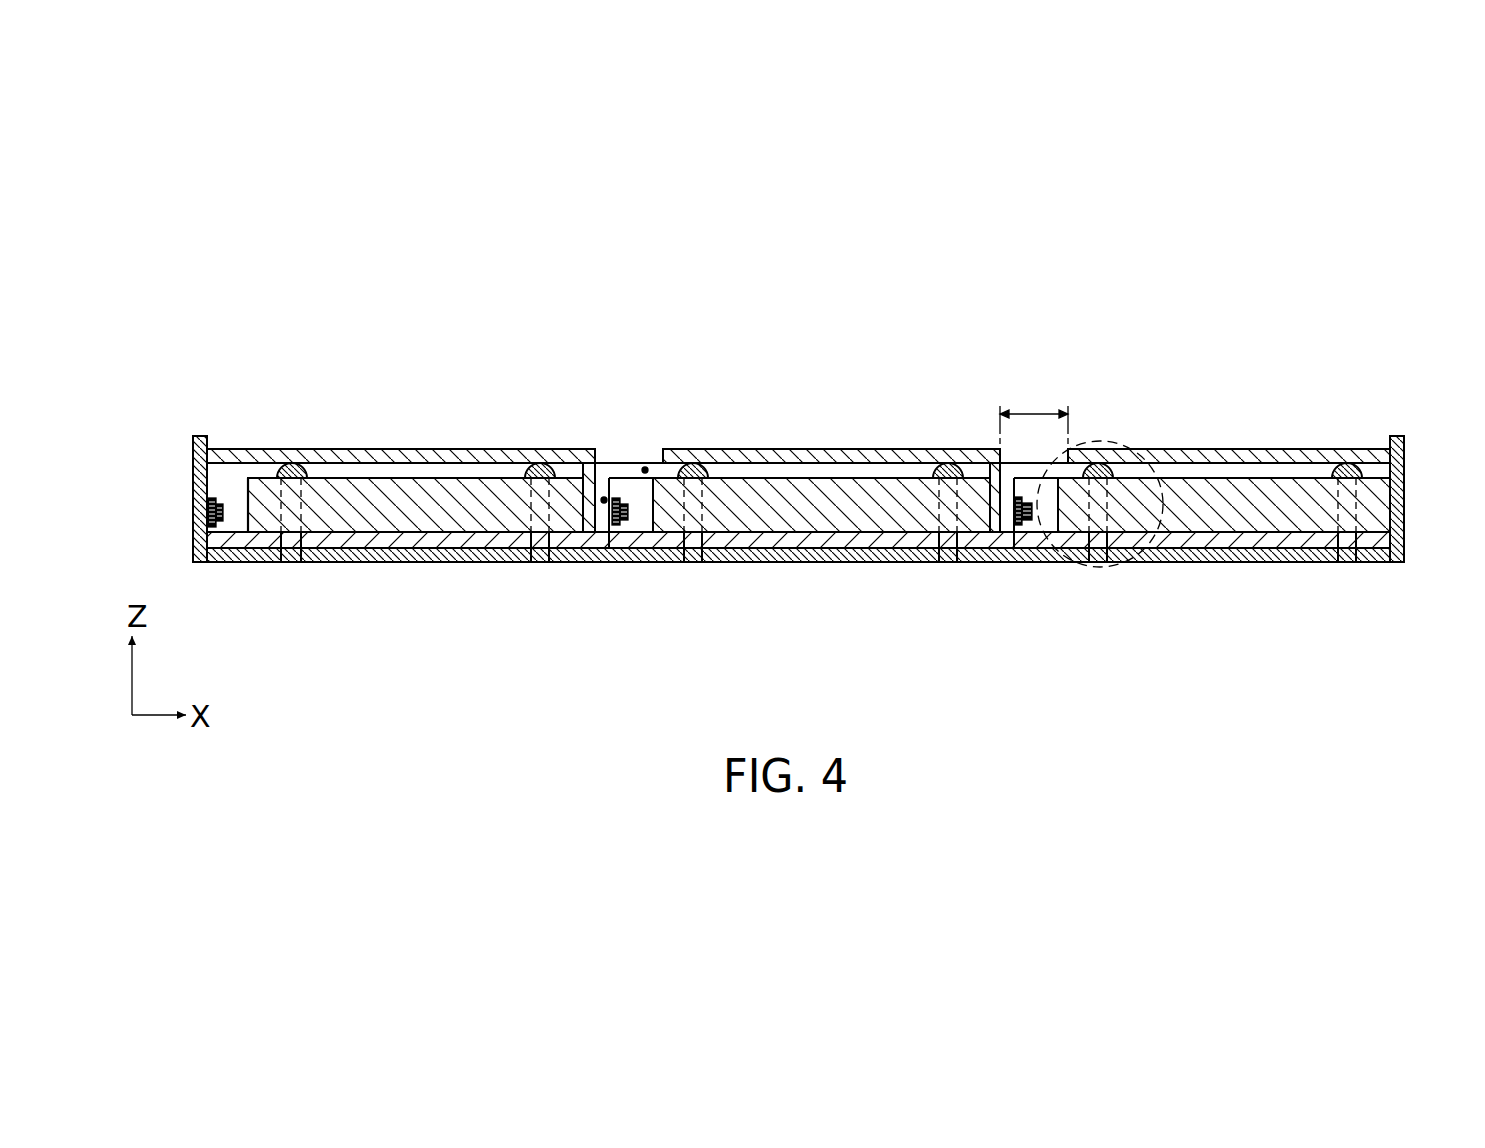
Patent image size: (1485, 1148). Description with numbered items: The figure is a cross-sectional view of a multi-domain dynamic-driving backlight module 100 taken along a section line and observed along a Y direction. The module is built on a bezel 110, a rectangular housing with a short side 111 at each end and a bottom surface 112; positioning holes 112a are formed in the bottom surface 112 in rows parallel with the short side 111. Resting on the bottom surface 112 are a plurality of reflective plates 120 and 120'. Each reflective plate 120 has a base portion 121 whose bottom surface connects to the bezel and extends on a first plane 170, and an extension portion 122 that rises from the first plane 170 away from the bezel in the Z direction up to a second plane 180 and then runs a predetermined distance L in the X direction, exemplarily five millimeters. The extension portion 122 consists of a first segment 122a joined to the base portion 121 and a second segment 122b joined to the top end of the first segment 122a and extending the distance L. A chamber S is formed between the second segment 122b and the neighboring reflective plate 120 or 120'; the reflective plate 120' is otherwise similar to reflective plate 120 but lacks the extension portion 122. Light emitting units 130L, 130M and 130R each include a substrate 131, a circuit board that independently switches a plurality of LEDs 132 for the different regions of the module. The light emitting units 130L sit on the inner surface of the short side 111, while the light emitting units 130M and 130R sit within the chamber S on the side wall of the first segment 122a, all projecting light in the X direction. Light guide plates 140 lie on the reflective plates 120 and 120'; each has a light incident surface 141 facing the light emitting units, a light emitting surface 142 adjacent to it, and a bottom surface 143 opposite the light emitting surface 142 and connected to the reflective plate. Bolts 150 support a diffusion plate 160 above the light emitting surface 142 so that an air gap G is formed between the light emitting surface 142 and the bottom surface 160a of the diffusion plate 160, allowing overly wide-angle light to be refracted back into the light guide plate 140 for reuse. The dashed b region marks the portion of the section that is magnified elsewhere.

The multi-domain dynamic-driving backlight module 100 is at (235, 256).
The bezel 110 is at (753, 504).
The short side 111 is at (195, 488).
The bottom surface 112 is at (798, 605).
The positioning holes 112a is at (1090, 563).
The reflective plate 120 is at (746, 518).
The reflective plate 120' is at (1172, 562).
The base portion 121 is at (512, 541).
The extension portion 122 is at (603, 549).
The first segment 122a is at (604, 497).
The second segment 122b is at (645, 467).
The light emitting unit 130L is at (216, 591).
The light emitting unit 130M is at (630, 532).
The light emitting unit 130R is at (1032, 528).
The substrate 131 is at (203, 522).
The LEDs 132 is at (247, 546).
The light guide plate 140 is at (406, 497).
The light incident surface 141 is at (253, 470).
The light emitting surface 142 is at (432, 477).
The bottom surface 143 is at (812, 530).
The bolt 150 is at (693, 462).
The diffusion plate 160 is at (358, 463).
The bottom surface 160a is at (377, 466).
The first plane 170 is at (1404, 547).
The second plane 180 is at (1404, 477).
The air gap G is at (898, 470).
The chamber S is at (1027, 486).
The predetermined distance L is at (1034, 416).
The b region b is at (1098, 440).